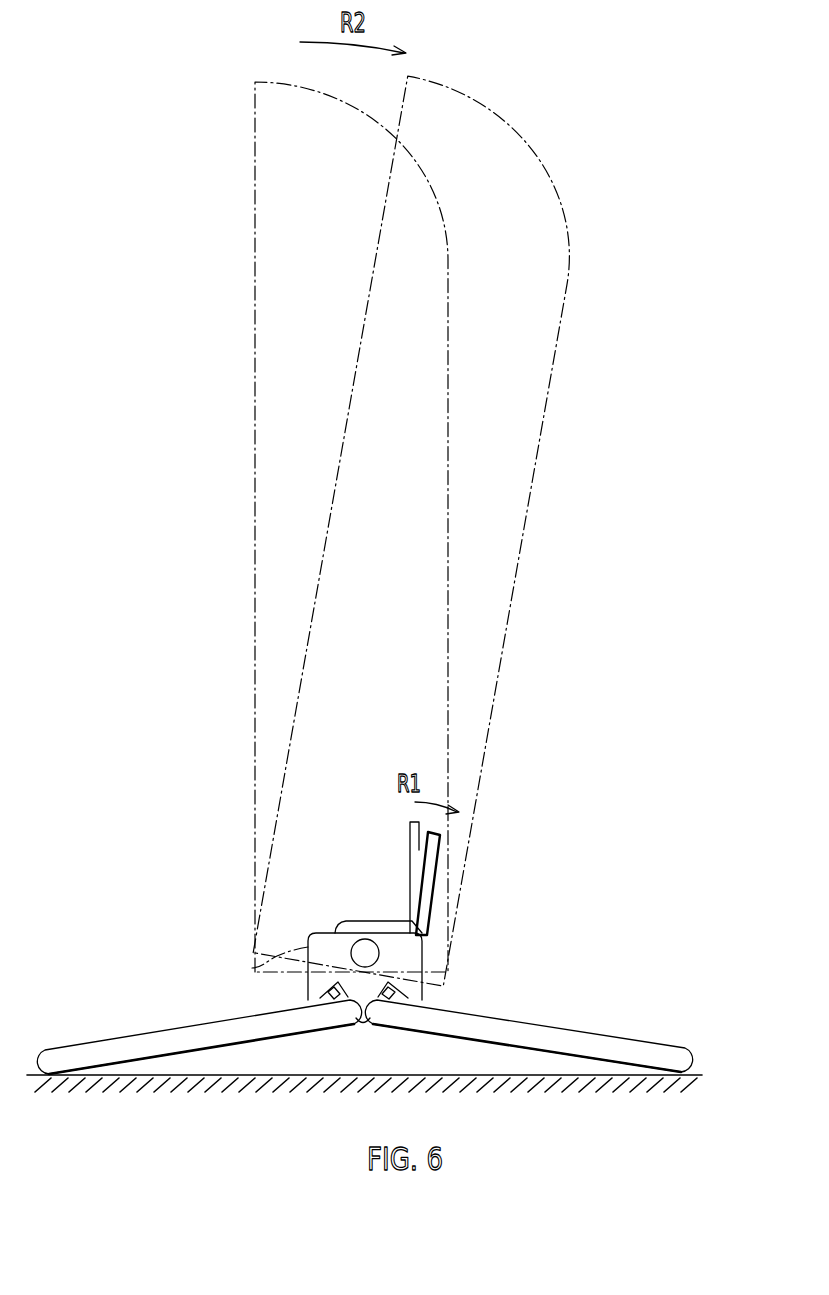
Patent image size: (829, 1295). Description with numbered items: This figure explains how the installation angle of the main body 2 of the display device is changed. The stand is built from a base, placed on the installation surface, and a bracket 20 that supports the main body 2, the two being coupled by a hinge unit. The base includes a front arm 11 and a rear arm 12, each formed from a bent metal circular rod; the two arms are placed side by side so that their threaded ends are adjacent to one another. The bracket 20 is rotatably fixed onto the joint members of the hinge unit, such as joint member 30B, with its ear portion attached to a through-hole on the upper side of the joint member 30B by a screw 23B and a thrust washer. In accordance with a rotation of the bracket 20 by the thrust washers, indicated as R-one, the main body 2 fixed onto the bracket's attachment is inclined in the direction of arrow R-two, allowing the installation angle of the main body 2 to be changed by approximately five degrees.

The main body 2 is at (518, 555).
The front arm 11 is at (97, 1050).
The rear arm 12 is at (627, 1047).
The bracket 20 is at (420, 877).
The screw 23B is at (368, 952).
The joint member 30B is at (252, 968).